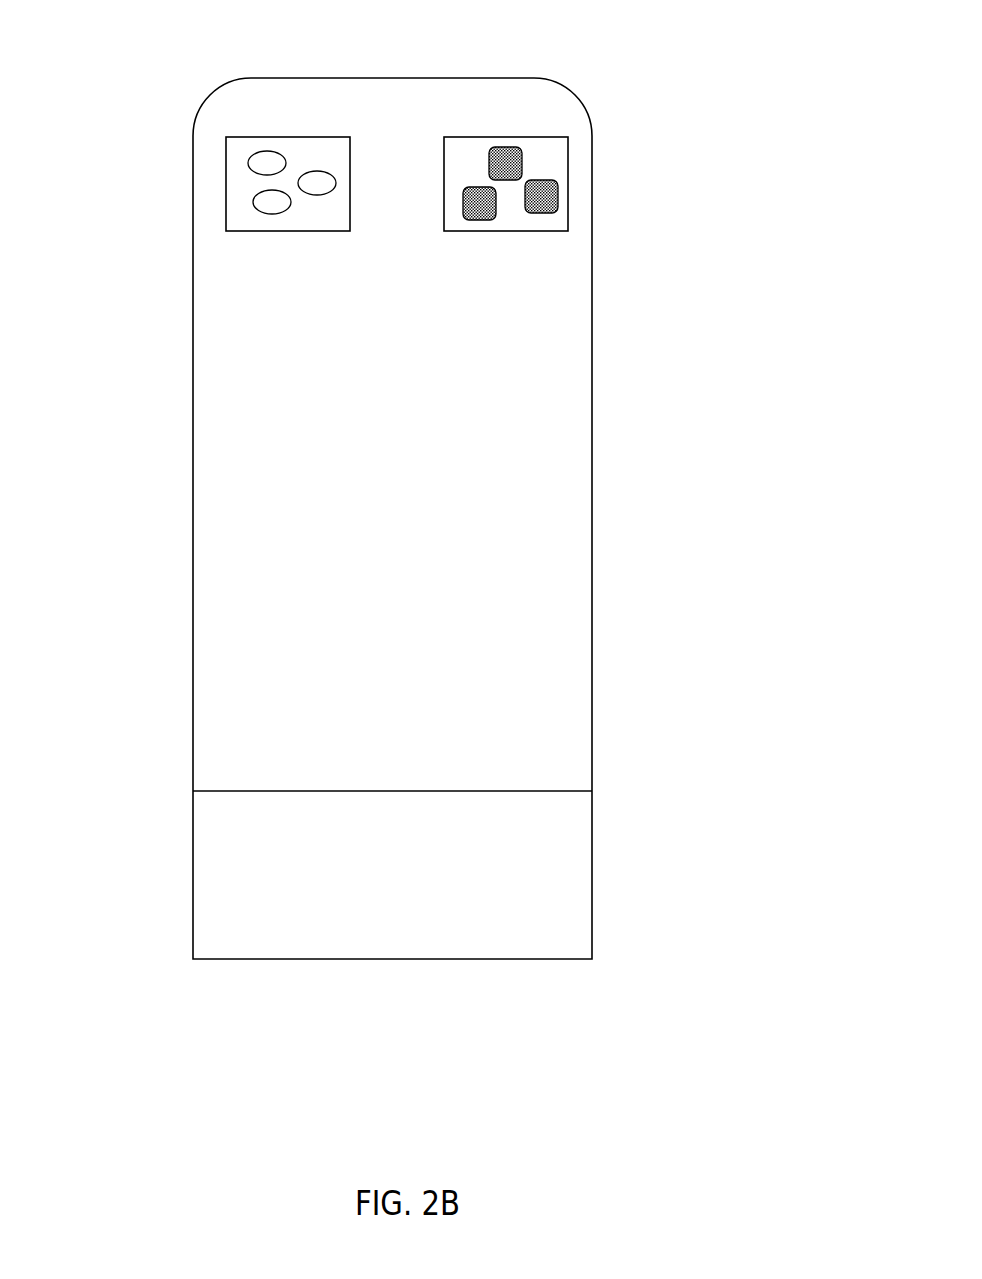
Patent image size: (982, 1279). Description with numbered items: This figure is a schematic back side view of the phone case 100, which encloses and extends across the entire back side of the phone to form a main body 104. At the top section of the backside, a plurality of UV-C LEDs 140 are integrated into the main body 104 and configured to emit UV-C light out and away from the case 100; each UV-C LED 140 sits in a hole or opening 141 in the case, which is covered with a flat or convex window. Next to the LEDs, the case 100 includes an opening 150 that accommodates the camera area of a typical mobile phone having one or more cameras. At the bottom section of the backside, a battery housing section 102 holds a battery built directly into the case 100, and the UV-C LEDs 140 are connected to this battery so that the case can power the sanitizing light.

The phone case 100 is at (397, 74).
The battery housing section 102 is at (445, 931).
The main body 104 is at (521, 665).
The UV-C LED 140 is at (526, 163).
The opening 141 is at (499, 132).
The opening 150 is at (223, 183).